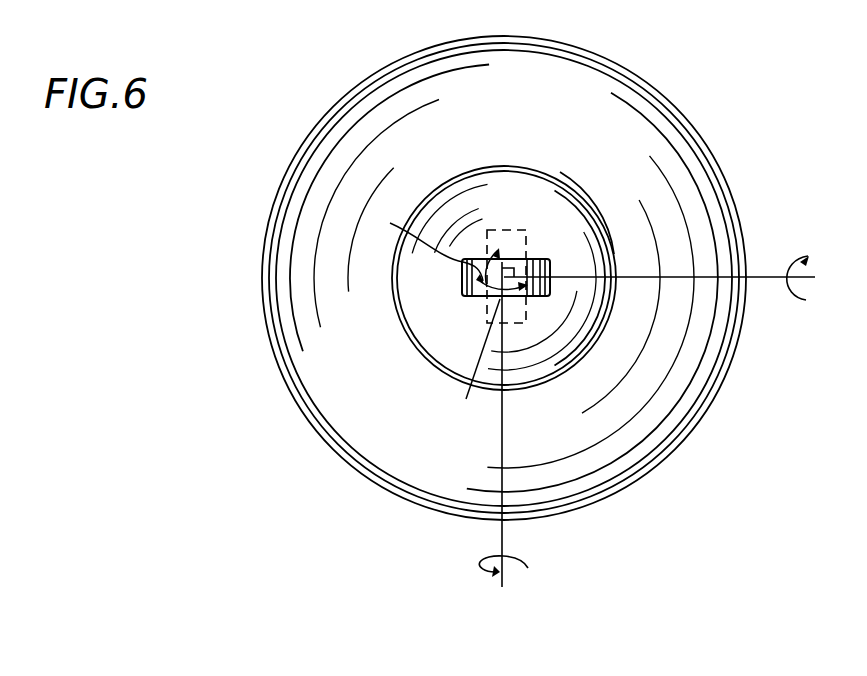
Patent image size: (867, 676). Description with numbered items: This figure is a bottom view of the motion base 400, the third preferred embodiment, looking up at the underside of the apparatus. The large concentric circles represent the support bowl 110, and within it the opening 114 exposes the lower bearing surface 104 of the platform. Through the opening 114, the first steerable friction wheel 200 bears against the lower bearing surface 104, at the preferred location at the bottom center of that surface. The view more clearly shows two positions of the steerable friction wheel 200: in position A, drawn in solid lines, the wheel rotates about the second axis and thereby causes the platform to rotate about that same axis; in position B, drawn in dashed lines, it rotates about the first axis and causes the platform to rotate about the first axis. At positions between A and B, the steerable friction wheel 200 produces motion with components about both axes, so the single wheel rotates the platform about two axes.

The motion base 400 is at (212, 246).
The support bowl 110 is at (598, 92).
The lower bearing surface 104 is at (553, 197).
The opening 114 is at (603, 211).
The steerable friction wheel 200 is at (546, 300).